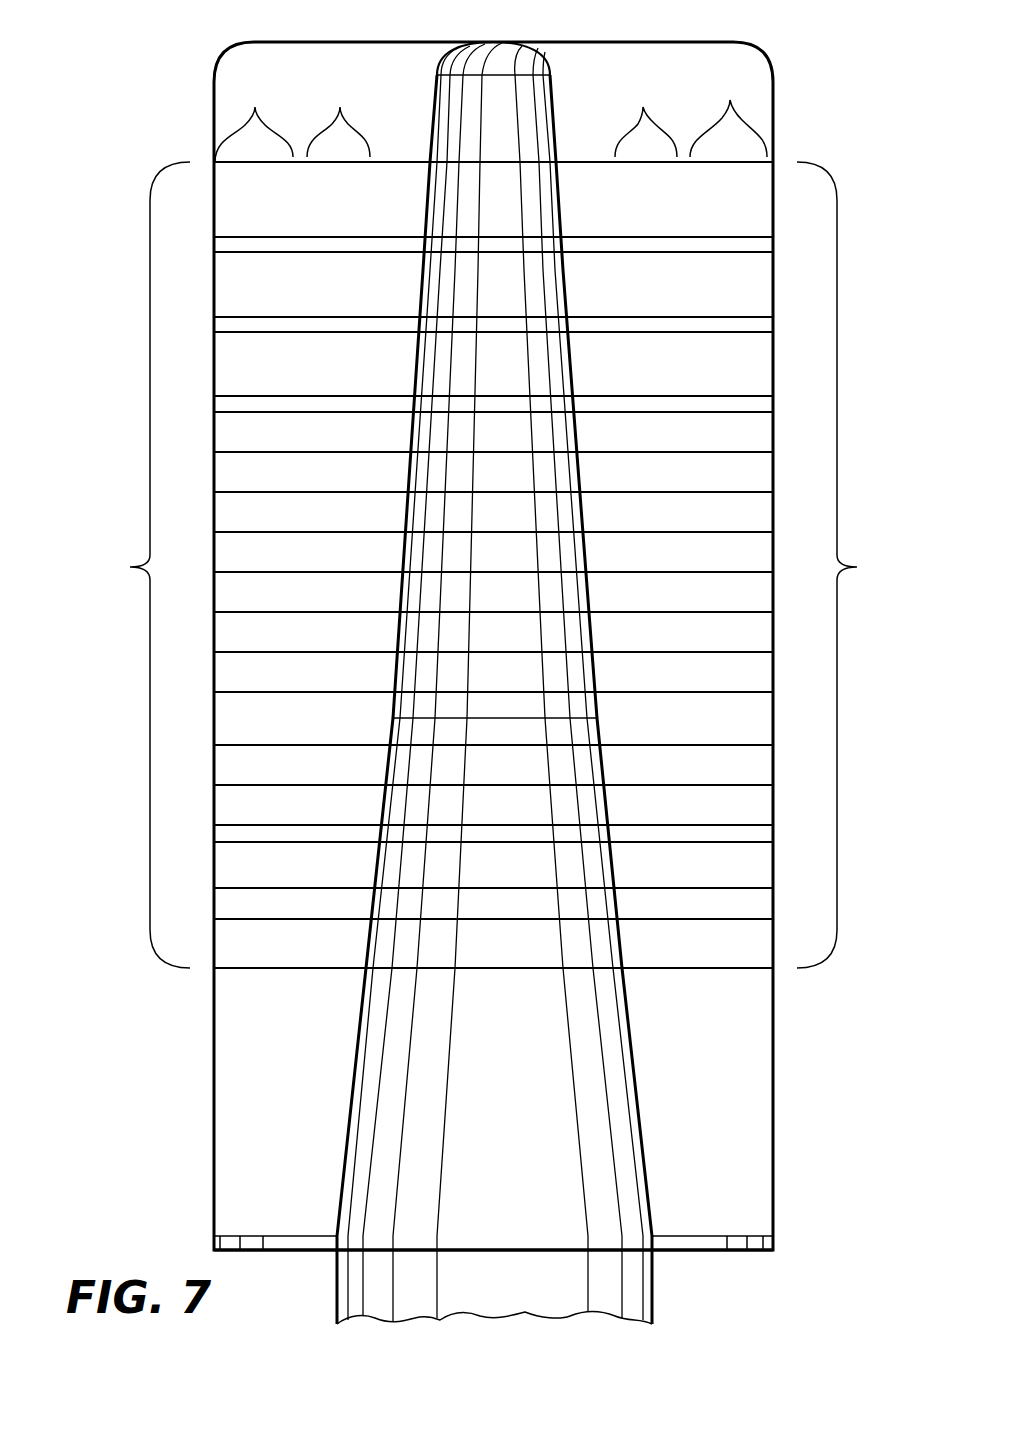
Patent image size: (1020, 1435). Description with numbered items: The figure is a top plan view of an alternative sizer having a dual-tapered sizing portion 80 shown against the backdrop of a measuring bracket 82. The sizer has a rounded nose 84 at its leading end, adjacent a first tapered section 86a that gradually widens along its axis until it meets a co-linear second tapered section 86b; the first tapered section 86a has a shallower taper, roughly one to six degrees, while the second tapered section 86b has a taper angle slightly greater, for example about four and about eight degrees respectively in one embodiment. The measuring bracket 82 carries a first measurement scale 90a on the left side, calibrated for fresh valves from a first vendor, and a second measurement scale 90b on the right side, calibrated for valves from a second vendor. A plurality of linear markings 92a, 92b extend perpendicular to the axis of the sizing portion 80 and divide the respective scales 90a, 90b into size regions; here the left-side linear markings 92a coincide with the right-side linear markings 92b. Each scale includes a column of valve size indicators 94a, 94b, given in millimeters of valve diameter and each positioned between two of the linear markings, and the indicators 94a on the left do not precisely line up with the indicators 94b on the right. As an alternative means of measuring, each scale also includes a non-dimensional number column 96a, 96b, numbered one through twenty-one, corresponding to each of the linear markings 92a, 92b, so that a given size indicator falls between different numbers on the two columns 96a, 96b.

The sizing portion 80 is at (654, 1190).
The measuring bracket 82 is at (775, 1107).
The rounded nose 84 is at (440, 58).
The first tapered section 86a is at (557, 127).
The second tapered section 86b is at (632, 1036).
The first measurement scale 90a is at (180, 553).
The second measurement scale 90b is at (812, 553).
The linear markings 92a is at (410, 160).
The linear markings 92b is at (584, 160).
The valve size indicators 94a is at (340, 107).
The valve size indicators 94b is at (643, 107).
The non-dimensional number column 96a is at (255, 107).
The non-dimensional number column 96b is at (731, 101).